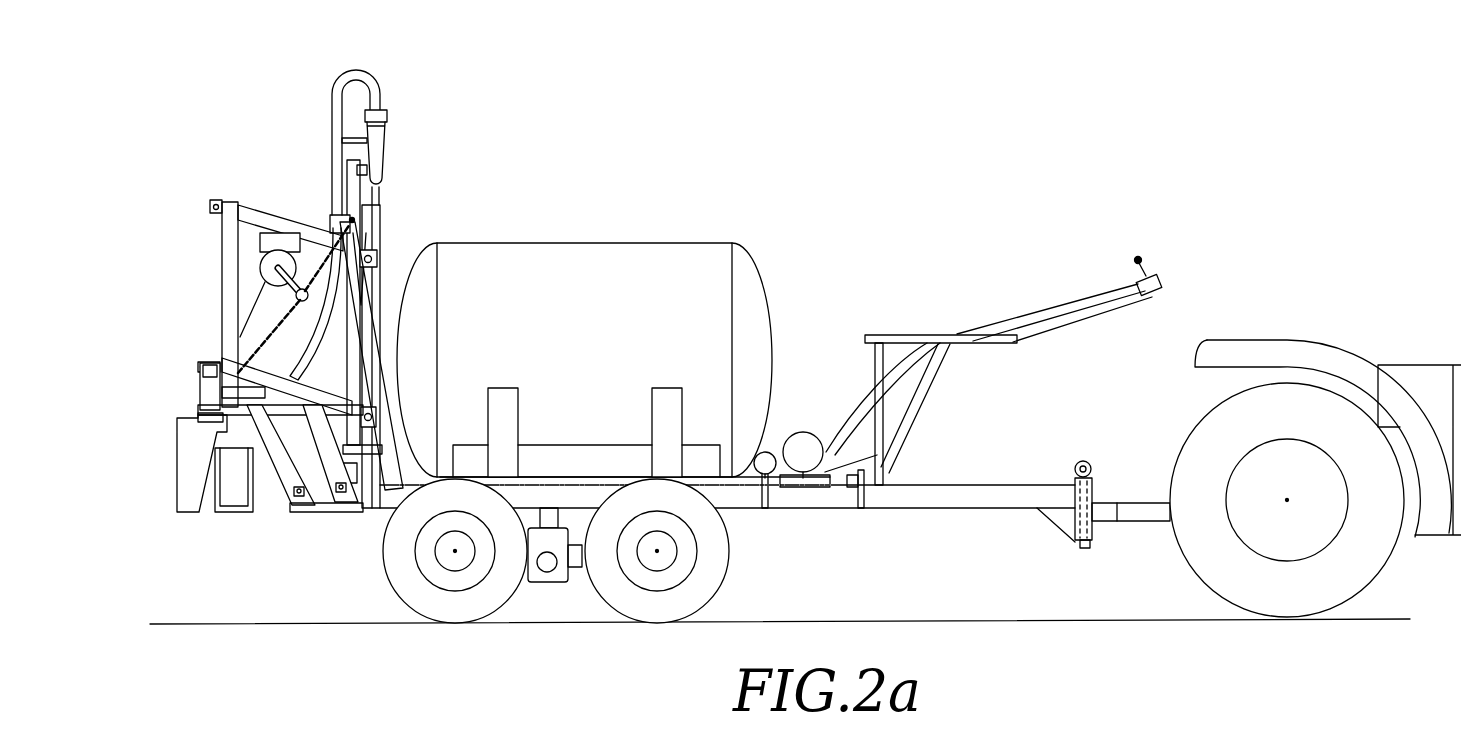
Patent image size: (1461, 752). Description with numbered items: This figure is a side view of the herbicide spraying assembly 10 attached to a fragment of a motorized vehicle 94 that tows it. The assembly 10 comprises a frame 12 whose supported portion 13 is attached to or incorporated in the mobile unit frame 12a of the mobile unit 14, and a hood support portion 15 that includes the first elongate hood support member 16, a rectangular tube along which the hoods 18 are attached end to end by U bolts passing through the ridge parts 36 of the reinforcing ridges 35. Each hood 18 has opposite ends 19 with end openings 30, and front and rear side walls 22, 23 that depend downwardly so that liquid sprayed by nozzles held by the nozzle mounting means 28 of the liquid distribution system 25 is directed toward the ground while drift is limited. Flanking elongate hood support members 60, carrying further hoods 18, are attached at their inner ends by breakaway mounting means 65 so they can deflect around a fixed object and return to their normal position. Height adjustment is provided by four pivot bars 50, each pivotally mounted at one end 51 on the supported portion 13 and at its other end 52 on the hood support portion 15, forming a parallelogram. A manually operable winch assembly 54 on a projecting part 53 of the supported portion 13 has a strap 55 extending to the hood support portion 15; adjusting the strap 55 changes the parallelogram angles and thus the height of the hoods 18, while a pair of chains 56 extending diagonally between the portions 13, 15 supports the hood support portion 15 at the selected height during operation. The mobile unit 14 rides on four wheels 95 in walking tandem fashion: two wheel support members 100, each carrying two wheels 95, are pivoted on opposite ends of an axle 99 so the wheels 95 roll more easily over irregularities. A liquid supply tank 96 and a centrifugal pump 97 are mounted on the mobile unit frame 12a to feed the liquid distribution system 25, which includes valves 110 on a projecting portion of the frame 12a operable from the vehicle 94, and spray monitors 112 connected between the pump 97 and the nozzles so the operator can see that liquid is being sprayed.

The assembly 10 is at (779, 208).
The frame 12 is at (368, 220).
The mobile unit frame 12a is at (748, 500).
The supported portion 13 is at (361, 240).
The mobile unit 14 is at (972, 490).
The hood support portion 15 is at (226, 270).
The first elongate hood support member 16 is at (252, 380).
The hoods 18 is at (170, 512).
The ends 19 is at (200, 500).
The front side wall 22 is at (338, 497).
The rear side wall 23 is at (240, 468).
The liquid distribution system 25 is at (341, 74).
The nozzle mounting means 28 is at (226, 396).
The end openings 30 is at (253, 505).
The reinforcing ridges 35 is at (292, 468).
The ridge parts 36 is at (174, 456).
The pivot bars 50 is at (256, 207).
The one end 51 is at (378, 260).
The other end 52 is at (216, 200).
The projecting part 53 is at (273, 236).
The winch assembly 54 is at (262, 253).
The strap 55 is at (240, 297).
The chains 56 is at (310, 250).
The flanking elongate hood support members 60 is at (205, 407).
The mounting means 65 is at (193, 375).
The motorized vehicle 94 is at (1412, 366).
The wheels 95 is at (717, 575).
The liquid supply tank 96 is at (660, 262).
The centrifugal pump 97 is at (803, 435).
The axle 99 is at (548, 572).
The wheel support members 100 is at (578, 558).
The valves 110 is at (1160, 275).
The spray monitors 112 is at (388, 132).